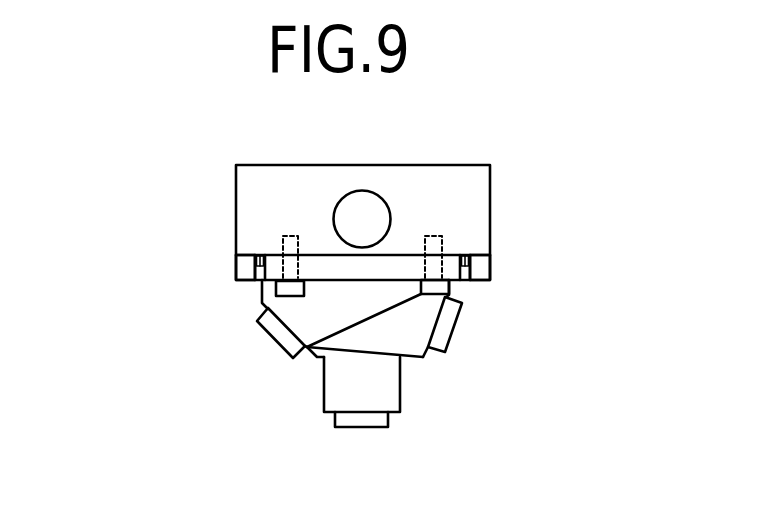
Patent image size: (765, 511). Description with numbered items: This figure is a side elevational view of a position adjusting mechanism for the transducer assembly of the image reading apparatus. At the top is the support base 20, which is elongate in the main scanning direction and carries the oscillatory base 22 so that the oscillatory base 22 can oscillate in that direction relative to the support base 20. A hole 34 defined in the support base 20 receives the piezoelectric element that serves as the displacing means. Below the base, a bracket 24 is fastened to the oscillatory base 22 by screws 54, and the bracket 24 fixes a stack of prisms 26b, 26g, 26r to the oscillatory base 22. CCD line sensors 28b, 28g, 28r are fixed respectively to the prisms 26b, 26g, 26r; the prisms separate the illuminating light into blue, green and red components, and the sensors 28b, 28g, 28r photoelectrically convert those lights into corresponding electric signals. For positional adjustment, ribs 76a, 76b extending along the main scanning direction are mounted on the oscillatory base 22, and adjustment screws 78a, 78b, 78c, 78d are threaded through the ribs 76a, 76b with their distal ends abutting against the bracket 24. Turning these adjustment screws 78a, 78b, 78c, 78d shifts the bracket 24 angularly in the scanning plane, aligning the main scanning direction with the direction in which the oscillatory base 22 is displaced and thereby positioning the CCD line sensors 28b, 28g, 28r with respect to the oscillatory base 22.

The support base 20 is at (363, 191).
The oscillatory base 22 is at (424, 176).
The bracket 24 is at (320, 254).
The hole 34 is at (364, 190).
The screws 54 is at (263, 302).
The prism 26b is at (318, 327).
The prism 26r is at (418, 340).
The prism 26g is at (390, 388).
The CCD line sensor 28b is at (282, 342).
The CCD line sensor 28r is at (450, 320).
The CCD line sensor 28g is at (373, 421).
The rib 76a is at (490, 268).
The rib 76b is at (237, 272).
The adjustment screw 78a is at (546, 200).
The adjustment screw 78b is at (464, 252).
The adjustment screw 78c is at (183, 211).
The adjustment screw 78d is at (262, 254).